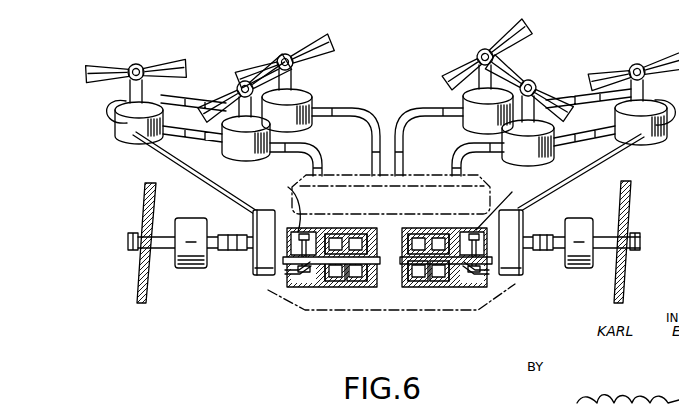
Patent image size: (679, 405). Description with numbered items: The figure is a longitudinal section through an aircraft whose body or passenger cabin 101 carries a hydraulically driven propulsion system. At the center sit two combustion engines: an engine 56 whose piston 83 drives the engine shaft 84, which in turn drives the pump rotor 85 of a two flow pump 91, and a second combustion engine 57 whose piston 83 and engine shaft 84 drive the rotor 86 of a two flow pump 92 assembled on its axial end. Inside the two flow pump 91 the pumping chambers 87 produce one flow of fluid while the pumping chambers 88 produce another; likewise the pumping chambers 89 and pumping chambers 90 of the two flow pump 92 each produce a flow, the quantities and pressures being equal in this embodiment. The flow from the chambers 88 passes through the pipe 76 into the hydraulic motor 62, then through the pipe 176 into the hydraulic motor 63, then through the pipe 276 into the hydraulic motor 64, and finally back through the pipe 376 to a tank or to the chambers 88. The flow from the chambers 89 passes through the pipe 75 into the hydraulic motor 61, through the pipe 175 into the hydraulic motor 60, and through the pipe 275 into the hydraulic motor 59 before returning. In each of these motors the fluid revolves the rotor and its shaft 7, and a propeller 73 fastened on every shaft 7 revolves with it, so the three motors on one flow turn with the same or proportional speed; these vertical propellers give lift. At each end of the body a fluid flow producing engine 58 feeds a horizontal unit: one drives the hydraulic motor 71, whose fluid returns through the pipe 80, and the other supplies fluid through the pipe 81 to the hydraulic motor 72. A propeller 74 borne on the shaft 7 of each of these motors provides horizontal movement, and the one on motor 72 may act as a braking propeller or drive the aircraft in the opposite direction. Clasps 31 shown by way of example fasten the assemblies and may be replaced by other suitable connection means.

The shaft 7 is at (125, 100).
The clasp 31 is at (204, 182).
The engine 56 is at (284, 201).
The combustion engine 57 is at (500, 203).
The engine and pump or fluid flow producing engine 58 is at (263, 258).
The hydraulic motor 59 is at (537, 153).
The hydraulic motor 60 is at (656, 128).
The hydraulic motor 61 is at (477, 117).
The hydraulic motor 62 is at (312, 121).
The hydraulic motor 63 is at (122, 134).
The hydraulic motor 64 is at (249, 152).
The hydraulic motor 71 is at (194, 268).
The hydraulic motor 72 is at (576, 225).
The propeller 73 is at (175, 66).
The propeller 74 is at (150, 292).
The pipe or tube 75 is at (403, 132).
The tube or pipe 76 is at (372, 129).
The tube or pipe 80 is at (229, 236).
The pipe or tube 81 is at (545, 251).
The engine piston 83 is at (297, 232).
The engine shaft 84 is at (320, 283).
The pump rotor 85 is at (344, 234).
The rotor 86 is at (432, 238).
The pumping chambers 87 is at (341, 283).
The pumping chambers 88 is at (367, 283).
The pumping chambers 89 is at (419, 283).
The pumping chambers 90 is at (443, 283).
The two flow pump 91 is at (332, 250).
The two flow pump 92 is at (423, 238).
The aircraft body 101 is at (491, 195).
The pipe or tube 175 is at (591, 96).
The tube or pipe 176 is at (181, 97).
The pipe or tube 275 is at (590, 143).
The pipe or tube 276 is at (190, 138).
The tube or pipe 376 is at (323, 163).